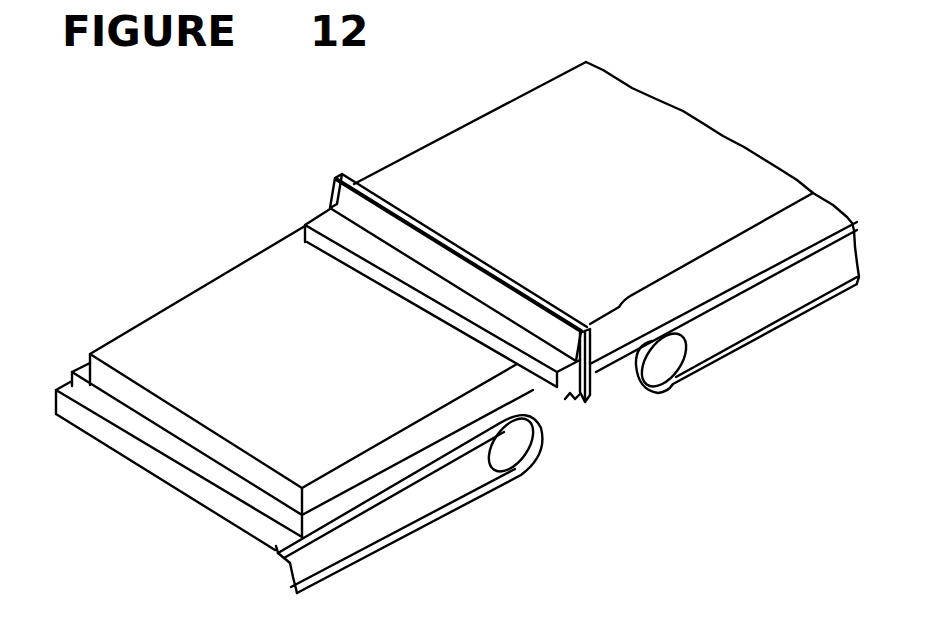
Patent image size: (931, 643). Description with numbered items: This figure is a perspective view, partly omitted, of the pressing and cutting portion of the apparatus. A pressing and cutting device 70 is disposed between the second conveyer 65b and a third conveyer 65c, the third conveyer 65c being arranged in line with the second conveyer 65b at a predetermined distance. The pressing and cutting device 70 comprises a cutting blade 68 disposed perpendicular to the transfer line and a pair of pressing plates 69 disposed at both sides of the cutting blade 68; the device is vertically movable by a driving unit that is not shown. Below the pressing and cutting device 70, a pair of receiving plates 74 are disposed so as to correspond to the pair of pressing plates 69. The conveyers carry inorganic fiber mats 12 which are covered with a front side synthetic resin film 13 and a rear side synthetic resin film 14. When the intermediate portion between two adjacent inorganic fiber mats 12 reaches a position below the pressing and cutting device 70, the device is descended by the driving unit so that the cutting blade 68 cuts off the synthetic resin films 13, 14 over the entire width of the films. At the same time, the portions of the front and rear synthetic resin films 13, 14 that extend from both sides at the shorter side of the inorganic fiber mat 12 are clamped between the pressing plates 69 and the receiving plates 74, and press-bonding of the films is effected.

The inorganic fiber mat 12 is at (93, 400).
The front side synthetic resin film 13 is at (247, 302).
The rear side synthetic resin film 14 is at (368, 494).
The second conveyer 65b is at (462, 478).
The third conveyer 65c is at (722, 333).
The cutting blade 68 is at (345, 203).
The pressing plate 69 is at (328, 222).
The pressing and cutting device 70 is at (311, 112).
The receiving plate 74 is at (610, 350).